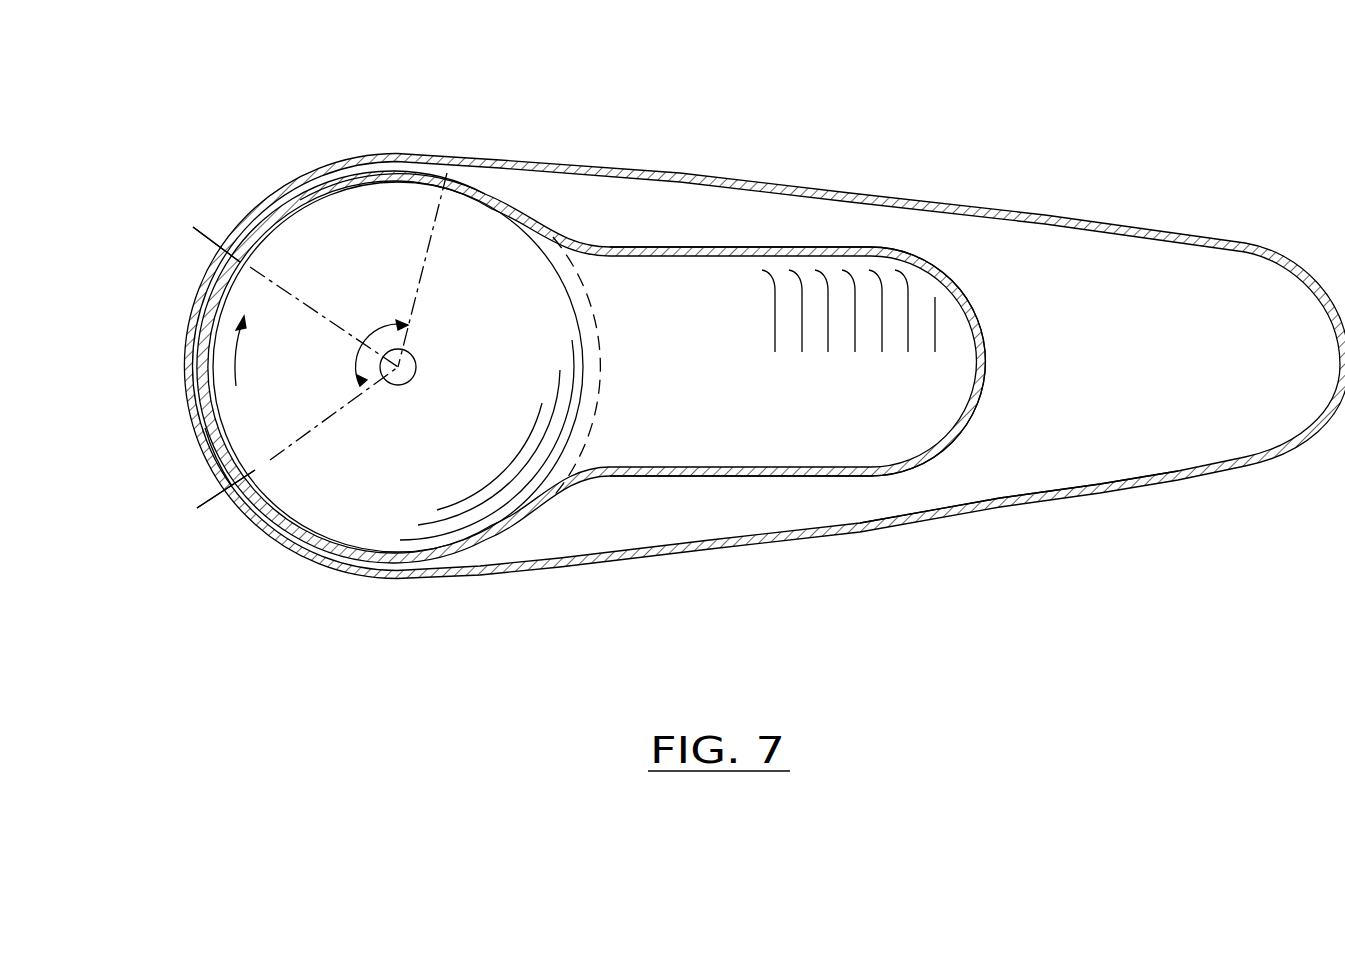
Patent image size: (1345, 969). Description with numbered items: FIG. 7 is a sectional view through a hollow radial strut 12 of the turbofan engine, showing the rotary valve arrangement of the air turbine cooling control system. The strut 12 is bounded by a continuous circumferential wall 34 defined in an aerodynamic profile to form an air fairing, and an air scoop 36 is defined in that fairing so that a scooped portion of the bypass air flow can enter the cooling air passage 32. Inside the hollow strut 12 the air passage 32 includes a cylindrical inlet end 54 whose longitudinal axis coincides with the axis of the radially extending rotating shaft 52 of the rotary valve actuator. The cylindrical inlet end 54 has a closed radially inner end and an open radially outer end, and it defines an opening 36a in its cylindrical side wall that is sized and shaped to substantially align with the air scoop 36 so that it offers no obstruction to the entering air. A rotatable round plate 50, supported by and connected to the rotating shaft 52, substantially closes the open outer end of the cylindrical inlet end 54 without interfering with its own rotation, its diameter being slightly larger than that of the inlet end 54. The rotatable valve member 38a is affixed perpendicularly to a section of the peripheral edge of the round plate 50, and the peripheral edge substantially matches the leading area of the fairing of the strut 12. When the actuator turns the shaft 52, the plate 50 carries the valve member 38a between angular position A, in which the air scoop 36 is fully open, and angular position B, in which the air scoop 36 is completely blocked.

The radial strut 12 is at (603, 567).
The air passage 32 is at (798, 477).
The continuous circumferential wall 34 is at (1043, 502).
The air scoop 36 is at (192, 304).
The opening 36a is at (233, 464).
The rotatable valve member 38a is at (205, 428).
The rotatable round plate 50 is at (600, 292).
The rotating shaft 52 is at (398, 386).
The cylindrical inlet end 54 is at (400, 168).